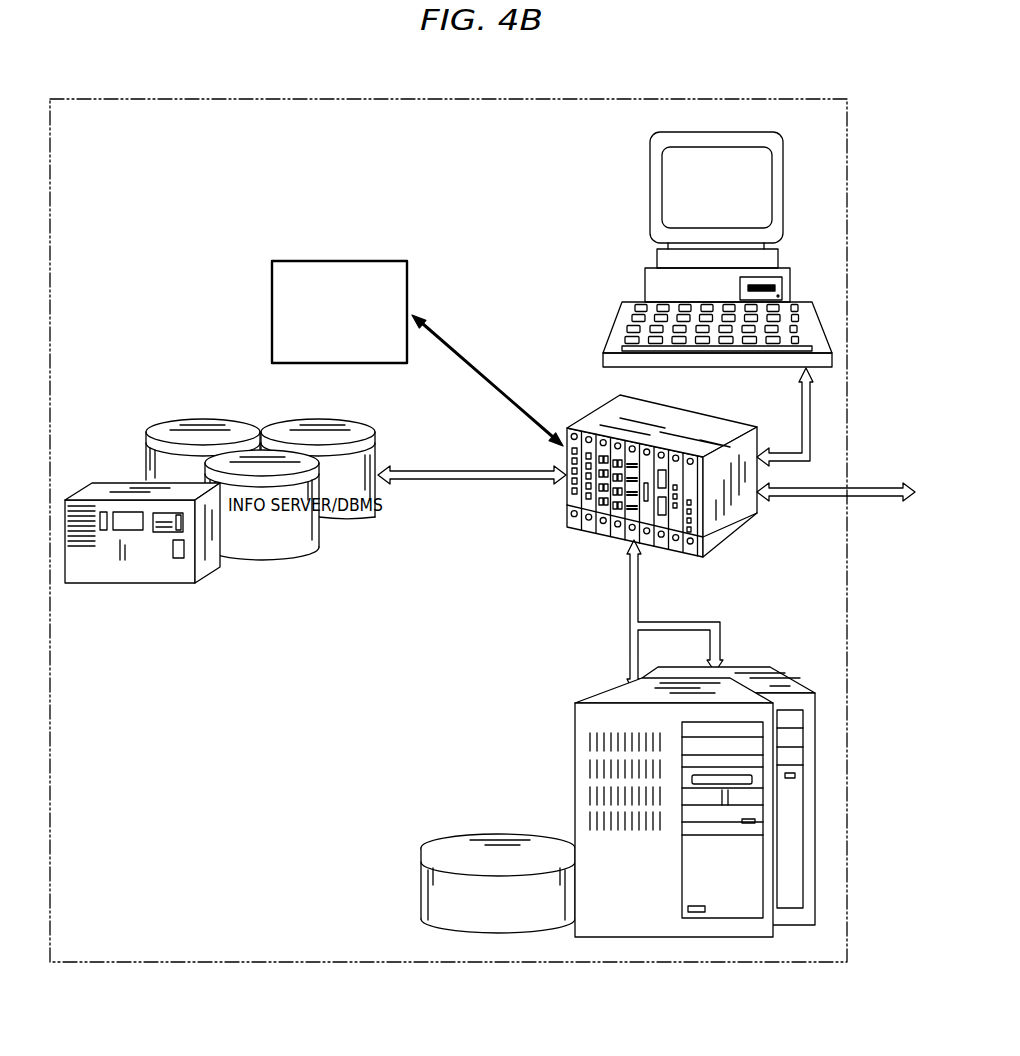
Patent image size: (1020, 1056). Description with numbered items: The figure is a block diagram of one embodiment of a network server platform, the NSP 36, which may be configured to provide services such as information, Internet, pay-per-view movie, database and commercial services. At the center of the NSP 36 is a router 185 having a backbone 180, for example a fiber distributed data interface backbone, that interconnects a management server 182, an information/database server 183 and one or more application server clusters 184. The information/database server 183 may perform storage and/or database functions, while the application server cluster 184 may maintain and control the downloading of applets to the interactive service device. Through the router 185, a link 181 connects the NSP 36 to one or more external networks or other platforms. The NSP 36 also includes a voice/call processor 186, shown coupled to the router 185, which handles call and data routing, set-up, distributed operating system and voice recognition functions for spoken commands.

The NSP 36 is at (872, 115).
The backbone 180 is at (412, 470).
The link 181 is at (857, 487).
The management server 182 is at (650, 203).
The information/database server 183 is at (132, 583).
The application server cluster 184 is at (590, 937).
The router 185 is at (748, 533).
The voice/call processor 186 is at (408, 281).